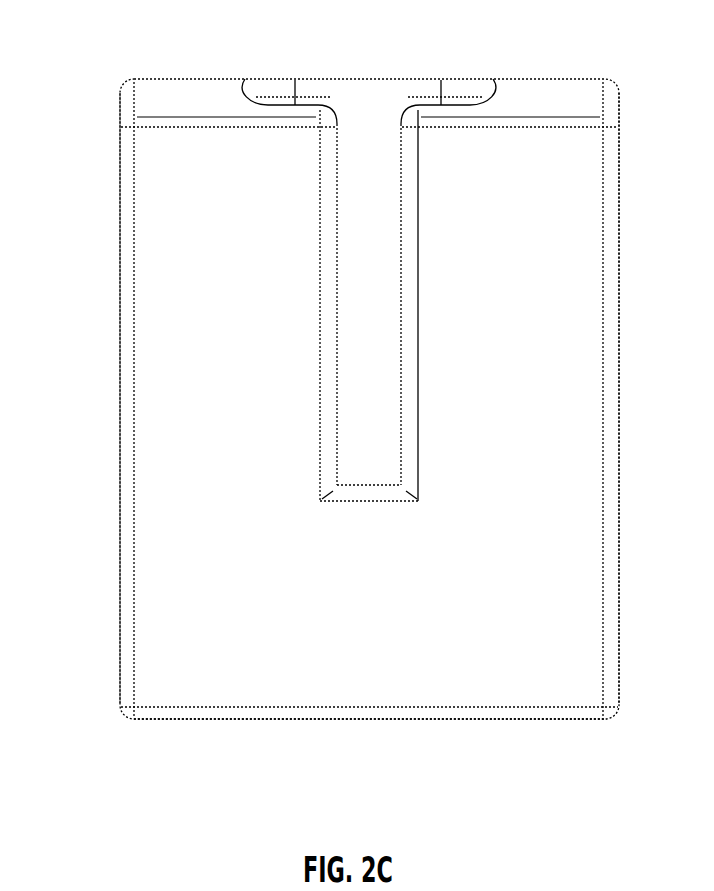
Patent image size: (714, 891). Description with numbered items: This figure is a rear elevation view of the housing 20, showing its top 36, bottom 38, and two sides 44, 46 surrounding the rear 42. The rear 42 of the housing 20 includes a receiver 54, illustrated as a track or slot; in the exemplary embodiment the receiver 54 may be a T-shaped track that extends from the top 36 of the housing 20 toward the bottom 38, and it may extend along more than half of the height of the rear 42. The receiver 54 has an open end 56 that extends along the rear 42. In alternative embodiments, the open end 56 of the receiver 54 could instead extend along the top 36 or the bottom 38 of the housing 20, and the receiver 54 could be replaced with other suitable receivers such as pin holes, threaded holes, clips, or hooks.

The housing 20 is at (76, 367).
The top 36 is at (553, 97).
The bottom 38 is at (255, 720).
The rear 42 is at (256, 600).
The first side 44 is at (119, 500).
The second side 46 is at (620, 500).
The receiver 54 is at (368, 112).
The open end 56 is at (401, 303).